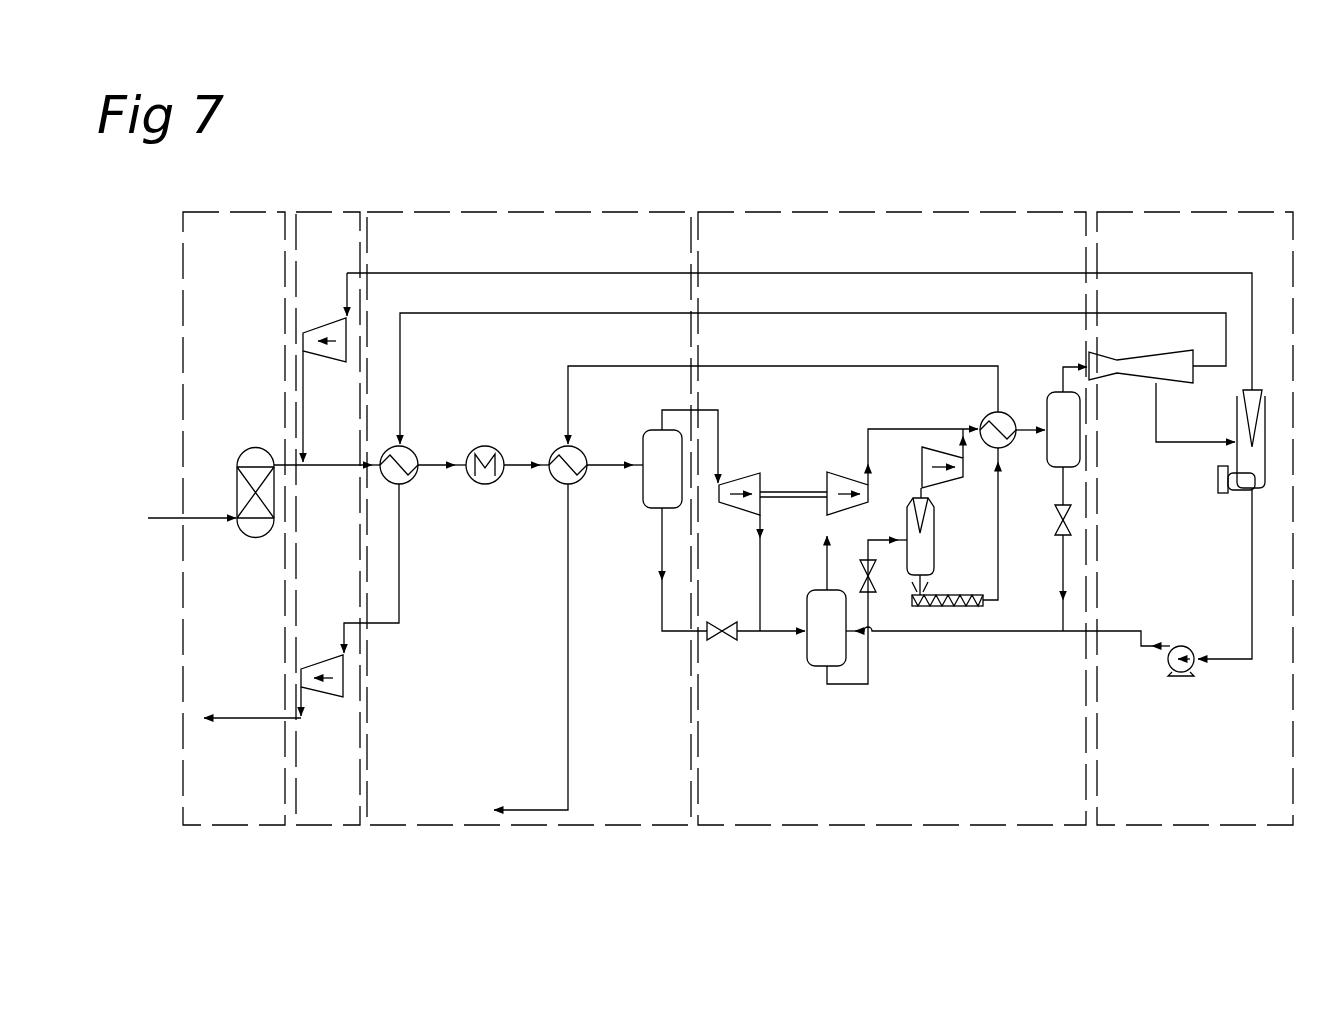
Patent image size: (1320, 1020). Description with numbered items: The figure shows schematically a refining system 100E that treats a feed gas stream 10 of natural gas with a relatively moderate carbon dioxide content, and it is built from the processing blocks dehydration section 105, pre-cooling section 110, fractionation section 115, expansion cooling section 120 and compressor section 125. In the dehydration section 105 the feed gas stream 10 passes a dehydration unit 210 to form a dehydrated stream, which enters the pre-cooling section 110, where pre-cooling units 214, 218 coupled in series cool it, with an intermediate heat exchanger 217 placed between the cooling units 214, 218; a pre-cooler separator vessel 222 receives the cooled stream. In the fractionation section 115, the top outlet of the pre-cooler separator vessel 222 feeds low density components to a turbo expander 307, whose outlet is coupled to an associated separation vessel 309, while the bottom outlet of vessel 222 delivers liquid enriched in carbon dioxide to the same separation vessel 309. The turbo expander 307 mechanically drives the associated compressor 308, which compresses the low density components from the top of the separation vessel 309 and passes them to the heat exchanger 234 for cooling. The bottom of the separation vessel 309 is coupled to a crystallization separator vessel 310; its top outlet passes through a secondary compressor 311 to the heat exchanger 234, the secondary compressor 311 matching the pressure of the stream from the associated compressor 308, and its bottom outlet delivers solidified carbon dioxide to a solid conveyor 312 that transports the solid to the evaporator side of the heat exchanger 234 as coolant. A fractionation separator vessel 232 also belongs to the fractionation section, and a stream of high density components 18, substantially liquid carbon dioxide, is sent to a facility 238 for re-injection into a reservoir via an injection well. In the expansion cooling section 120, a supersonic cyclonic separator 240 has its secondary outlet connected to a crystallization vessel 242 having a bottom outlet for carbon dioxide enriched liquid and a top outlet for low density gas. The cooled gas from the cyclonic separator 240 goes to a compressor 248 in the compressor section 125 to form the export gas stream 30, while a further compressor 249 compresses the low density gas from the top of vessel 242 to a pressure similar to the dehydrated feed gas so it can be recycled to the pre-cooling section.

The feed gas stream 10 is at (167, 518).
The export gas stream 30 is at (233, 718).
The refining system 100E is at (711, 172).
The dehydration section 105 is at (224, 212).
The compressor section 125 is at (317, 212).
The pre-cooling section 110 is at (531, 212).
The fractionation section 115 is at (858, 212).
The expansion cooling section 120 is at (1125, 212).
The dehydration unit 210 is at (257, 528).
The pre-cooling unit 214 is at (413, 452).
The intermediate heat exchanger 217 is at (497, 452).
The pre-cooling unit 218 is at (582, 452).
The pre-cooler separator vessel 222 is at (657, 498).
The fractionation separator vessel 232 is at (1057, 403).
The heat exchanger 234 is at (1010, 437).
The supersonic cyclonic separator 240 is at (1148, 366).
The crystallization vessel 242 is at (1238, 432).
The compressor 248 is at (340, 695).
The further compressor 249 is at (340, 362).
The turbo expander 307 is at (733, 502).
The associated compressor 308 is at (838, 478).
The associated separation vessel 309 is at (817, 657).
The crystallization separator vessel 310 is at (930, 557).
The secondary compressor 311 is at (937, 450).
The solid conveyor 312 is at (950, 606).
The high density components 18 is at (515, 647).
The facility for re-injecting CO2 238 is at (568, 747).